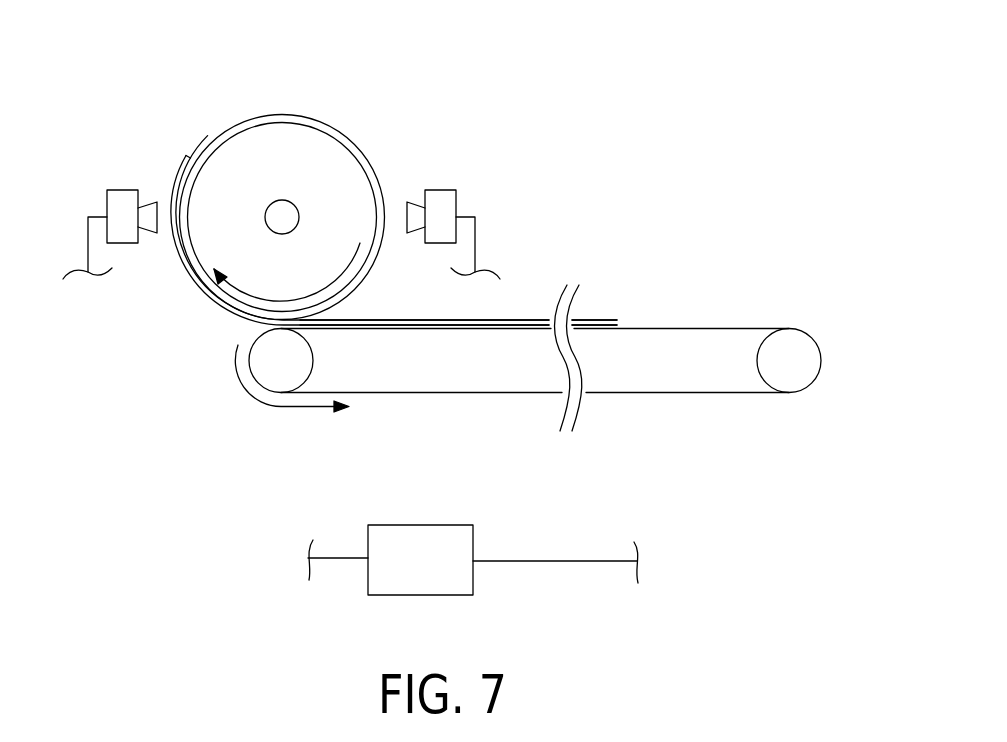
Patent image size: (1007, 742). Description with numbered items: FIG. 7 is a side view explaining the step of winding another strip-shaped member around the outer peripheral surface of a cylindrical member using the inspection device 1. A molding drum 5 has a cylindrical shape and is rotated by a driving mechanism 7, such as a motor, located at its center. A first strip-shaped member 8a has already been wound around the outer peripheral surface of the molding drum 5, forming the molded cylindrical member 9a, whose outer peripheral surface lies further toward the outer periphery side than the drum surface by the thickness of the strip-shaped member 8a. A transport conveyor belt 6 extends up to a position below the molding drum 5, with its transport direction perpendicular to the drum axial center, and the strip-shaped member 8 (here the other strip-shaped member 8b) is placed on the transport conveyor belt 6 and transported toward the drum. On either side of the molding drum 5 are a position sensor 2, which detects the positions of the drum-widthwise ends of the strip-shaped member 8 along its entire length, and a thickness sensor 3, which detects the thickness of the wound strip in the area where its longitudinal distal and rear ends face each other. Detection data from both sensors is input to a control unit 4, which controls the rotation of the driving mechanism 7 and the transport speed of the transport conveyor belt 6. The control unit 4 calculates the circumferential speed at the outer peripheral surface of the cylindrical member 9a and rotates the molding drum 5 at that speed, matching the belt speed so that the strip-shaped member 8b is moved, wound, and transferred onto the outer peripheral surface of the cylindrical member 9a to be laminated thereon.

The inspection device 1 is at (542, 128).
The position sensor 2 is at (126, 243).
The thickness sensor 3 is at (443, 190).
The control unit 4 is at (410, 540).
The molding drum 5 is at (262, 135).
The transport conveyor belt 6 is at (490, 393).
The driving mechanism 7 is at (283, 213).
The strip-shaped member 8 is at (518, 320).
The strip-shaped member 8a is at (207, 138).
The other strip-shaped member 8b is at (458, 322).
The cylindrical member 9a is at (372, 170).